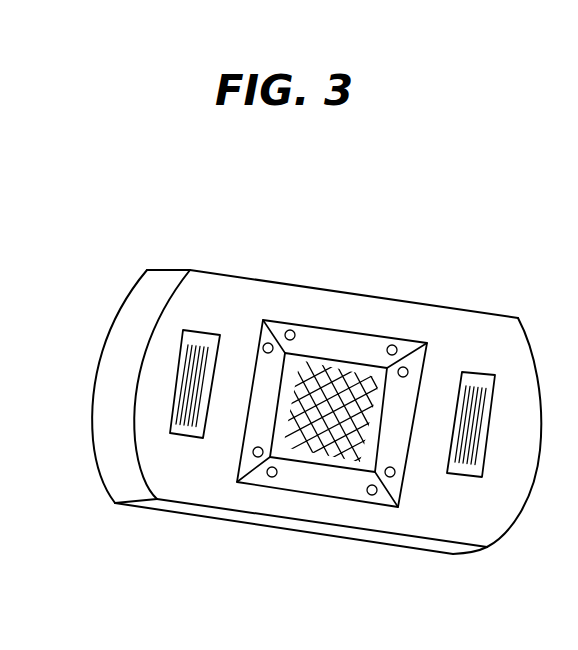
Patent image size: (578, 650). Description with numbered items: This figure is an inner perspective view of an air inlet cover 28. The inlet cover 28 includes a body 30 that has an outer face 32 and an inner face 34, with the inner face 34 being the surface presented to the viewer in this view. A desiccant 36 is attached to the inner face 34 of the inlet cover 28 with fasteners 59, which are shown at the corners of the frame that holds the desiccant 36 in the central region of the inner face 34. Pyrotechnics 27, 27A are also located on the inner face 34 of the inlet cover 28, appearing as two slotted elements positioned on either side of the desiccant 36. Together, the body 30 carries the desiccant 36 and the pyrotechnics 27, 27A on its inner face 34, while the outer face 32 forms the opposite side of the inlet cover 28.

The inlet cover 28 is at (340, 228).
The body 30 is at (150, 293).
The outer face 32 is at (103, 478).
The inner face 34 is at (222, 290).
The desiccant 36 is at (353, 372).
The pyrotechnics 27 is at (196, 440).
The pyrotechnics 27A is at (473, 476).
The fasteners 59 is at (271, 478).